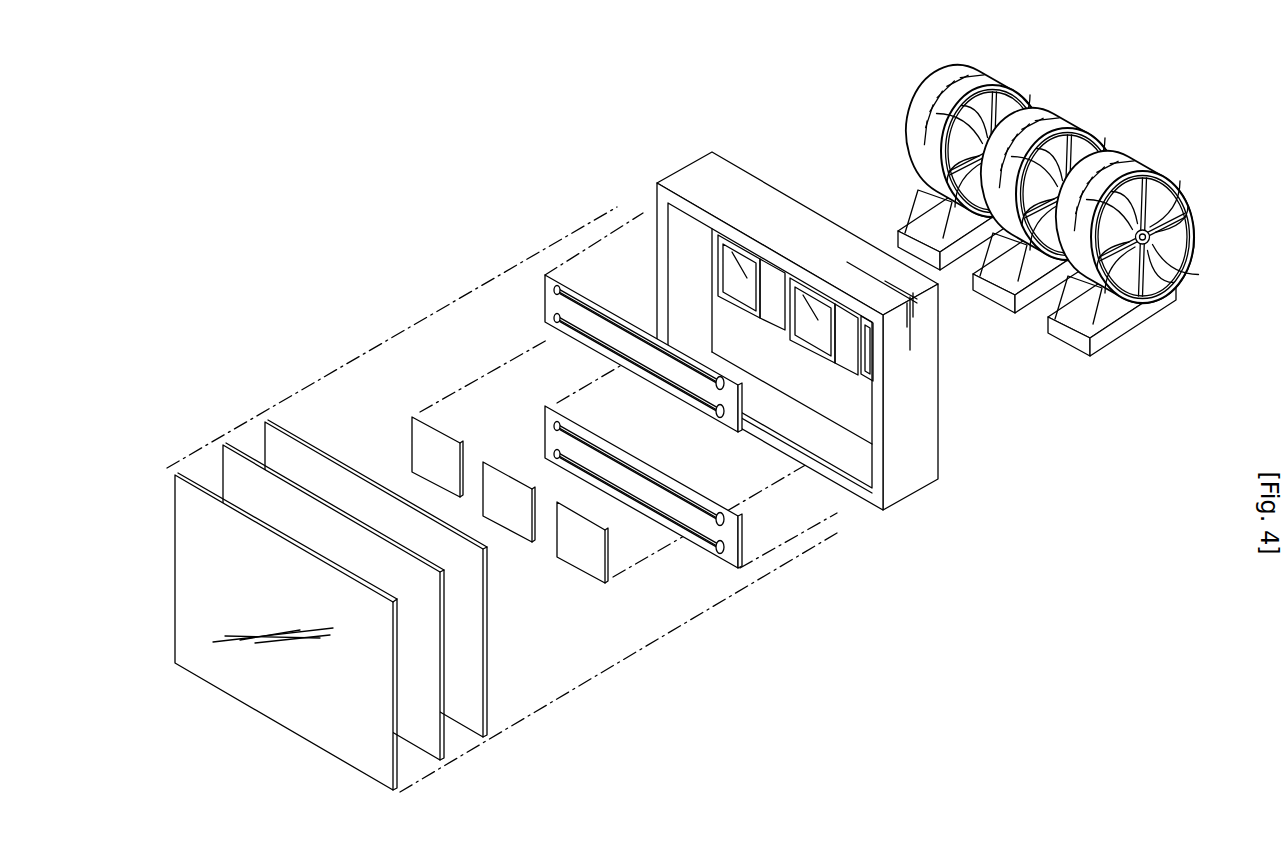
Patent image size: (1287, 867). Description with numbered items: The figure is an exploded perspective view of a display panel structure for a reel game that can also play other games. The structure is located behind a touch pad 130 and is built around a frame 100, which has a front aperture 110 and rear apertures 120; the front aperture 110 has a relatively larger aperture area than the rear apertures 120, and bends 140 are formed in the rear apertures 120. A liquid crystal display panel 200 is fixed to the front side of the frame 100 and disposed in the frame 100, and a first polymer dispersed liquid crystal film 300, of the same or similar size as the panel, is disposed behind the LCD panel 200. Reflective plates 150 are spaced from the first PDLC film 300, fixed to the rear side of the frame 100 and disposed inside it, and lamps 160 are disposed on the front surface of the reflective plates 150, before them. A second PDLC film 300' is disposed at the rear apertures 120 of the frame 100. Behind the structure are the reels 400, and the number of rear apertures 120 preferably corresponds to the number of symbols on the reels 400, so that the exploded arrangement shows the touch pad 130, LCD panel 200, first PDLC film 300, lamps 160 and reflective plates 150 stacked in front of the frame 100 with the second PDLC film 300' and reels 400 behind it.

The frame 100 is at (670, 133).
The front aperture 110 is at (829, 358).
The rear apertures 120 is at (797, 280).
The touch pad 130 is at (263, 682).
The bends 140 is at (856, 345).
The reflective plates 150 is at (548, 317).
The lamps 160 is at (585, 438).
The liquid crystal display (LCD) panel 200 is at (242, 480).
The first polymer dispersed liquid crystal (PDLC) film 300 is at (346, 530).
The second PDLC film 300' is at (524, 617).
The reels 400 is at (1162, 346).